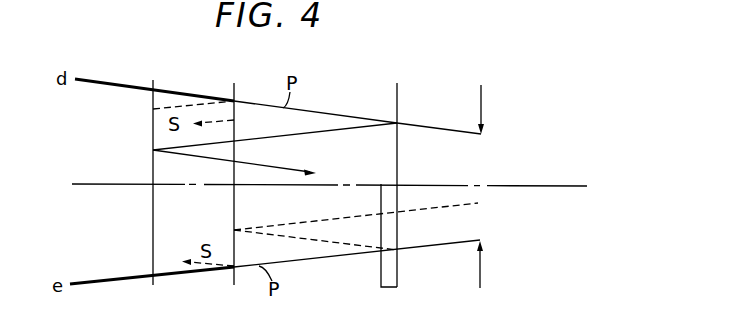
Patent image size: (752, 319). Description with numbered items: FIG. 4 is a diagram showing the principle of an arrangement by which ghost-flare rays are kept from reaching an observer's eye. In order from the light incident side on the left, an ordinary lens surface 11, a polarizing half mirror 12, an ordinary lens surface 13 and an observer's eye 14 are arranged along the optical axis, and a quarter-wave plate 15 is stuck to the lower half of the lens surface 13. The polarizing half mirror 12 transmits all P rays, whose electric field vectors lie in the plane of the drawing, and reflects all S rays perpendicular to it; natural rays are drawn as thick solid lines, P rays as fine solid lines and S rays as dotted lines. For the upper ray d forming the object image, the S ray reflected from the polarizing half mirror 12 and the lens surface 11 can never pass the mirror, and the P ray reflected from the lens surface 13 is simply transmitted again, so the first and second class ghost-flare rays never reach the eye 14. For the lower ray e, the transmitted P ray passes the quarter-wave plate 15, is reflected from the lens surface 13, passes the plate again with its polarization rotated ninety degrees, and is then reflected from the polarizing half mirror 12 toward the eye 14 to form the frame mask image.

The ordinary lens surface 11 is at (154, 83).
The polarizing half mirror 12 is at (235, 84).
The ordinary lens surface 13 is at (398, 93).
The observer's eye 14 is at (482, 95).
The 1/4 wavelength plate 15 is at (381, 266).